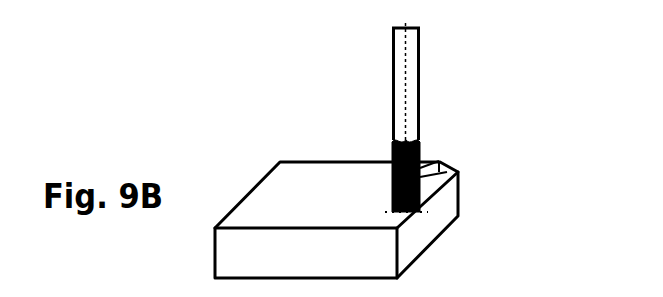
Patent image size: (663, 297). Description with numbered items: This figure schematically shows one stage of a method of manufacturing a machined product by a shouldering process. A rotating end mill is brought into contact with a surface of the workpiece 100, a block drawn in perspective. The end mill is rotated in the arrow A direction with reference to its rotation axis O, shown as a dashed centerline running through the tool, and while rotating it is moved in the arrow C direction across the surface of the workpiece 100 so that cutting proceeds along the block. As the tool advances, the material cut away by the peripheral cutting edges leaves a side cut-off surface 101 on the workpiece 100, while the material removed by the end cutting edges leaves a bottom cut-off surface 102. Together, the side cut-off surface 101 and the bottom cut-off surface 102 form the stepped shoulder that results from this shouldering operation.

The workpiece 100 is at (275, 185).
The side cut-off surface 101 is at (441, 167).
The bottom cut-off surface 102 is at (437, 183).
The rotation axis O is at (408, 106).
The arrow A direction A is at (428, 84).
The arrow C direction C is at (335, 200).